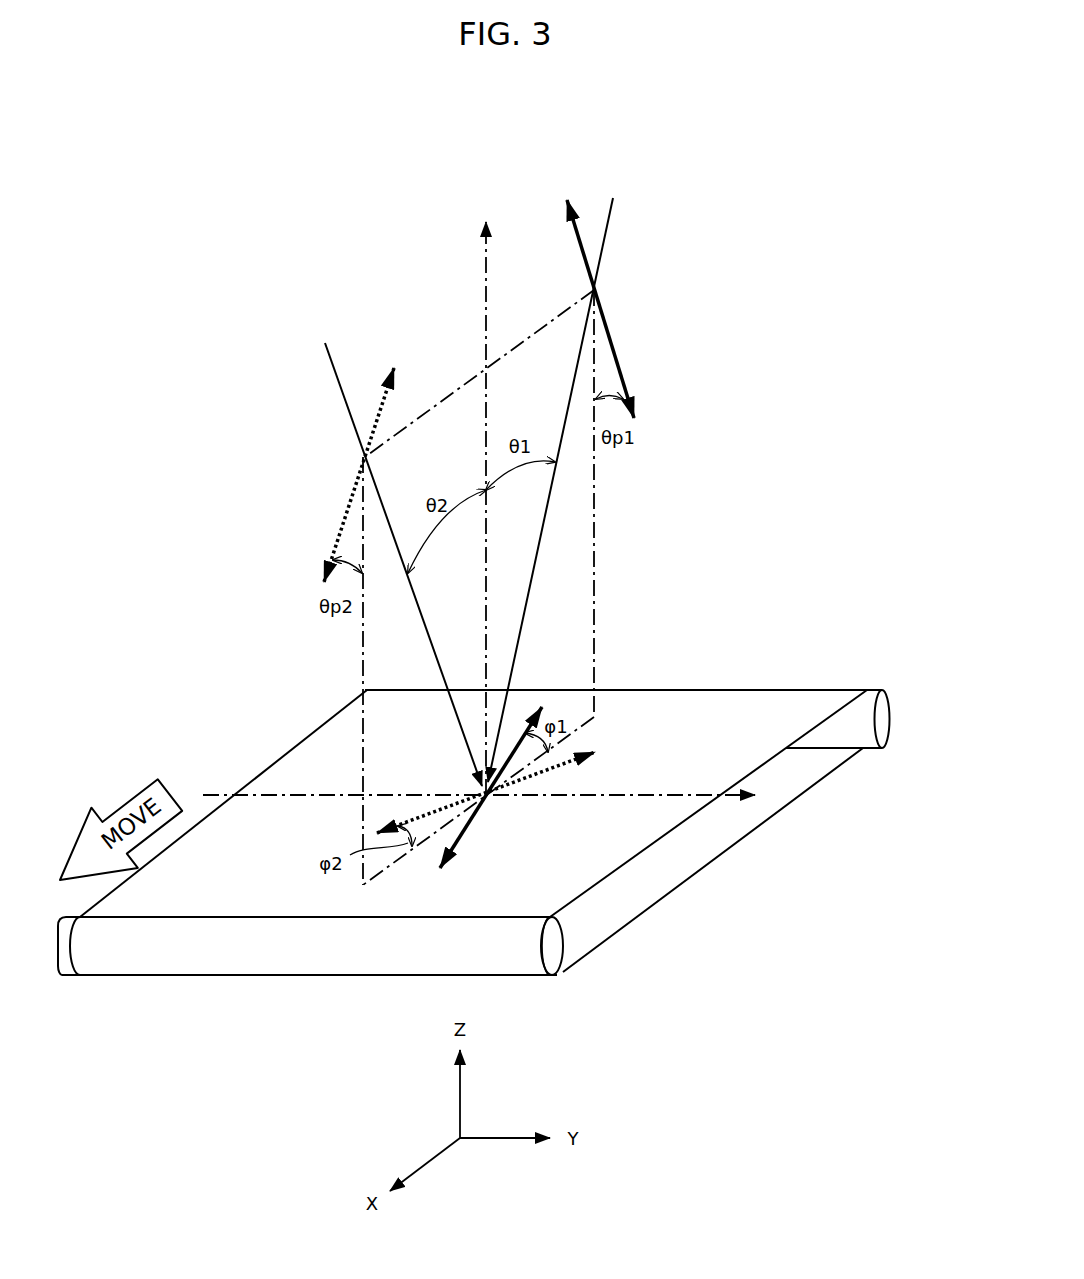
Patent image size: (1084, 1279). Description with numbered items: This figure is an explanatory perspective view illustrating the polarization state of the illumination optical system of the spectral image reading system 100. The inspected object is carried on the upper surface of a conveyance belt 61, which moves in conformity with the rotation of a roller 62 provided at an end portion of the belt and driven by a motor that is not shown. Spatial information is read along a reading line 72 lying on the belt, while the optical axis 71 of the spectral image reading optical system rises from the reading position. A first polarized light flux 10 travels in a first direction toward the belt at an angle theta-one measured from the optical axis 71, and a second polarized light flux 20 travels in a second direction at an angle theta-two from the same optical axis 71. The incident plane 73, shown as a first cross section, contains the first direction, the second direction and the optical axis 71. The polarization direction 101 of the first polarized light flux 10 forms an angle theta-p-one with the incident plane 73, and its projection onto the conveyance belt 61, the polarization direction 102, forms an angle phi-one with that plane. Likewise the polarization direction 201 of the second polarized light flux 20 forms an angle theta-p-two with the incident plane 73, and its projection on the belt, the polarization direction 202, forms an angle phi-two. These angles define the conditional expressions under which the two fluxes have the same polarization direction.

The spectral image reading system 100 is at (618, 482).
The first polarized light flux 10 is at (551, 492).
The polarization direction of the first polarized light flux 101 is at (611, 337).
The polarization direction of the first polarized light flux projected on the convey 102 is at (518, 742).
The second polarized light flux 20 is at (337, 380).
The polarization direction of the second polarized light flux 201 is at (347, 512).
The polarization direction of the second polarized light flux projected on the conve 202 is at (430, 813).
The optical axis 71 is at (486, 253).
The reading line 72 is at (225, 795).
The incident plane 73 is at (453, 387).
The conveyance belt 61 is at (731, 841).
The roller 62 is at (558, 947).